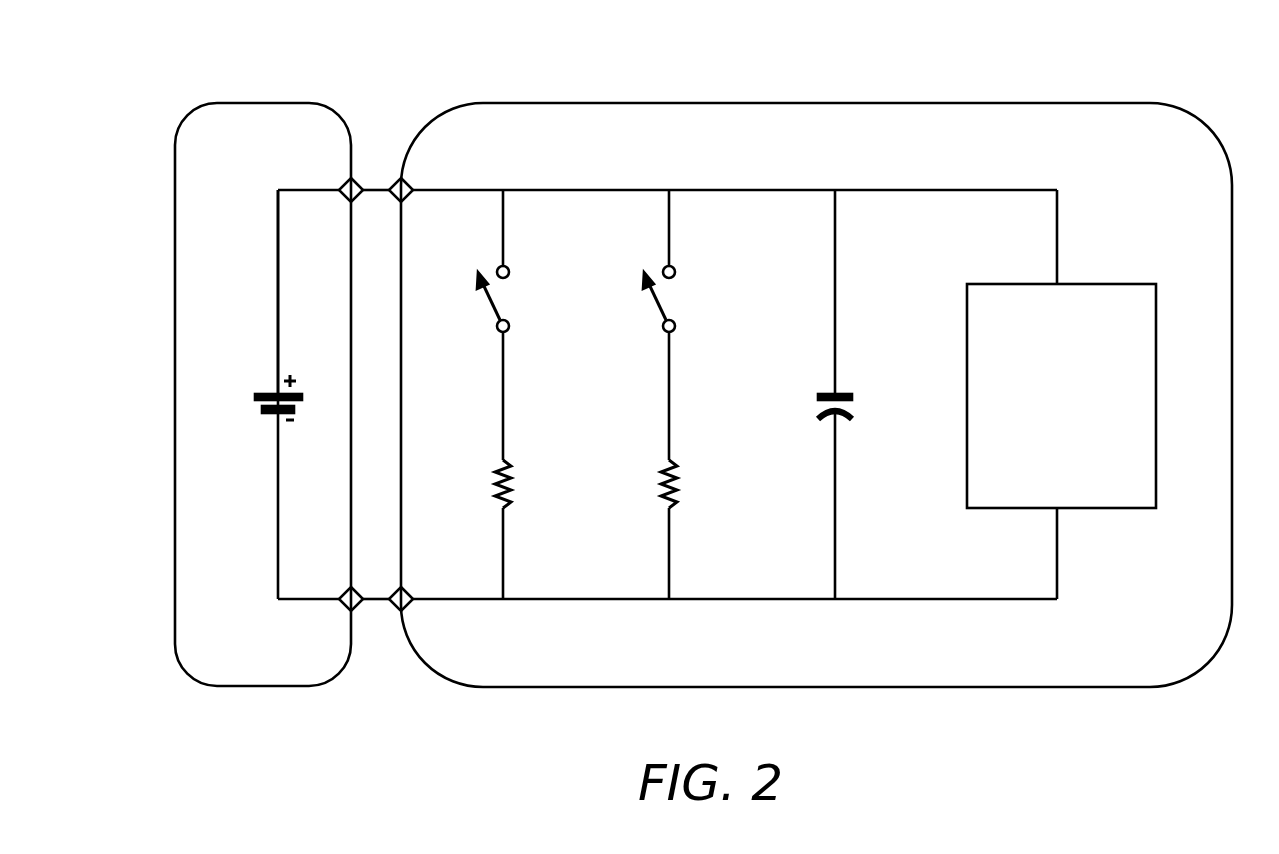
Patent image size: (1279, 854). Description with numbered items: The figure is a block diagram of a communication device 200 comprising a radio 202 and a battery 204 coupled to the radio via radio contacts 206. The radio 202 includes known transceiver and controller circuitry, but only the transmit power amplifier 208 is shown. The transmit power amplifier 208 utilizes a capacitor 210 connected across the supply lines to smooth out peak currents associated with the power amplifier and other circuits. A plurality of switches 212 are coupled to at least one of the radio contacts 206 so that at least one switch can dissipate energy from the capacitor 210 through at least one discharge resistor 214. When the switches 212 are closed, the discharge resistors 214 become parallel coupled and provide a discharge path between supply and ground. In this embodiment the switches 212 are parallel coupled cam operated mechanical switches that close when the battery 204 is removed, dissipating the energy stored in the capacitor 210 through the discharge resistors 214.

The communication device 200 is at (116, 52).
The radio 202 is at (1205, 126).
The battery 204 is at (191, 116).
The radio contacts 206 is at (409, 197).
The transmit power amplifier 208 is at (981, 284).
The capacitor 210 is at (823, 395).
The switches 212 is at (486, 298).
The discharge resistors 214 is at (512, 486).